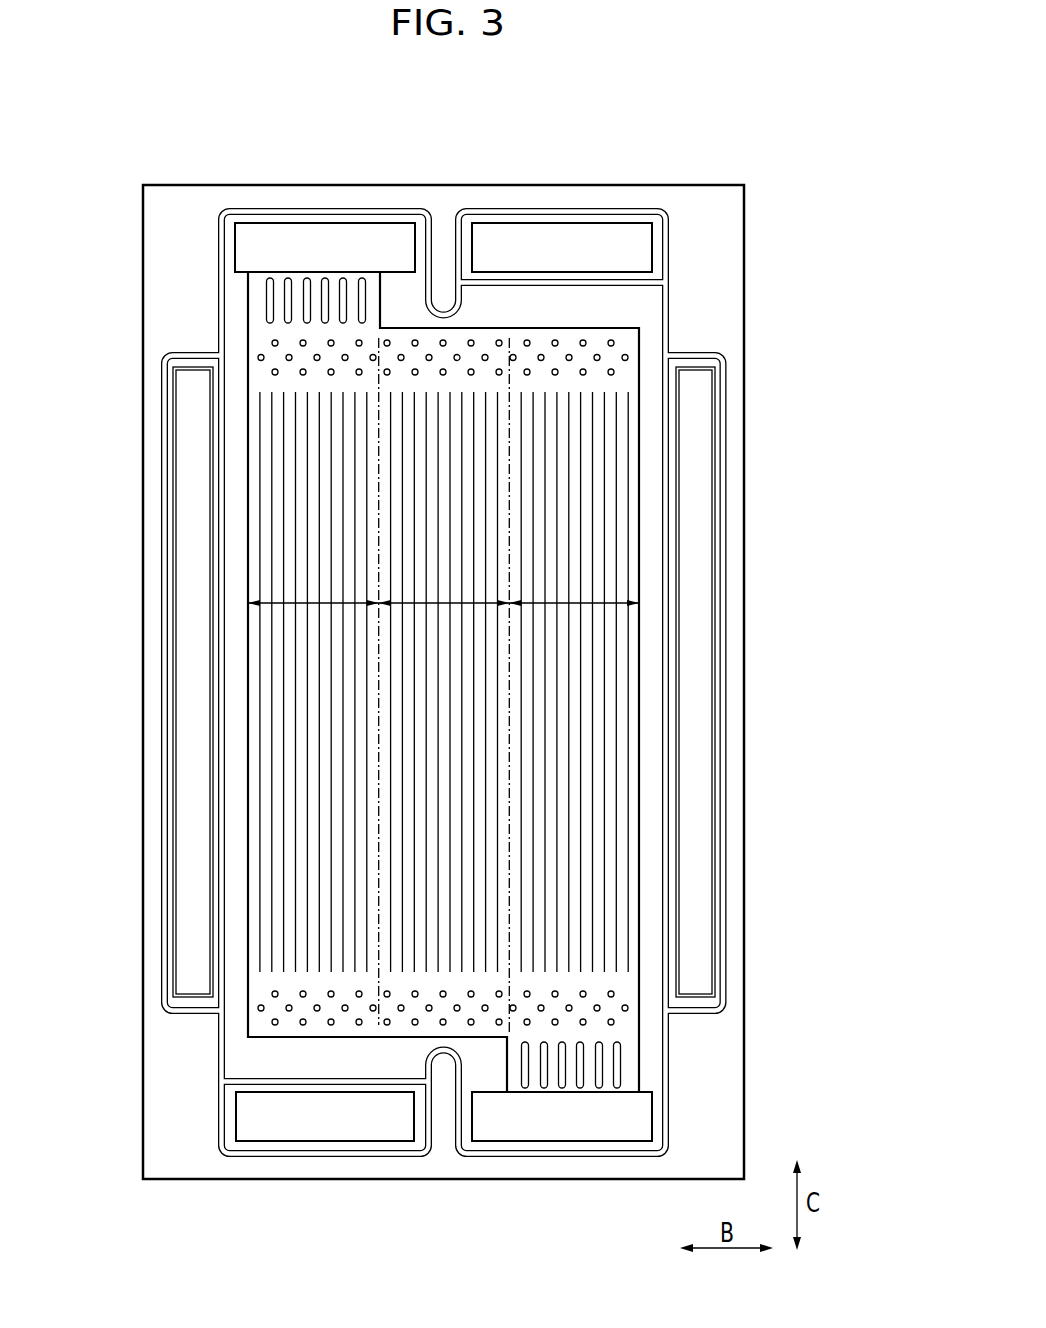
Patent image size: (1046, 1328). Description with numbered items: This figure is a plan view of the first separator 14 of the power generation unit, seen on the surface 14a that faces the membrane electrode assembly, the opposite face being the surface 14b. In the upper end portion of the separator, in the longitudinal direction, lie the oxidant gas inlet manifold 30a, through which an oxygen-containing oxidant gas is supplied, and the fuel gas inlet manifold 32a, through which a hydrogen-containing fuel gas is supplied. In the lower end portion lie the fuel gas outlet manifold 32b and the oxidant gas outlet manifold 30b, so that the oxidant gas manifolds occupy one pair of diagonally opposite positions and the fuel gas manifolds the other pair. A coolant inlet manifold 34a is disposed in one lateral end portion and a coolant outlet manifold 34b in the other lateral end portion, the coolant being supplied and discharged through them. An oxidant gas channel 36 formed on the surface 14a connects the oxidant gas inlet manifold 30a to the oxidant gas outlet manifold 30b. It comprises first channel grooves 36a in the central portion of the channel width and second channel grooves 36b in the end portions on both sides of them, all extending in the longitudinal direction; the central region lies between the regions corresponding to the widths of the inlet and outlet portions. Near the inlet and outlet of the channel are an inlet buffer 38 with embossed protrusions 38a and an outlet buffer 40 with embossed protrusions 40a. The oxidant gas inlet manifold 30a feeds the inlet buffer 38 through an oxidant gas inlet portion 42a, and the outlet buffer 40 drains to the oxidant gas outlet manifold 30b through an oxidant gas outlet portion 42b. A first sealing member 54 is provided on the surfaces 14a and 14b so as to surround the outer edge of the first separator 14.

The first separator 14 is at (536, 81).
The surface of the first separator 14a is at (718, 1113).
The surface of the first separator 14b is at (723, 1140).
The oxidant gas inlet manifold 30a is at (283, 223).
The oxidant gas outlet manifold 30b is at (527, 1141).
The fuel gas inlet manifold 32a is at (524, 223).
The fuel gas outlet manifold 32b is at (284, 1141).
The coolant inlet manifold 34a is at (195, 752).
The coolant outlet manifold 34b is at (693, 468).
The oxidant gas channel 36 is at (446, 682).
The first channel grooves 36a is at (468, 788).
The second channel grooves 36b is at (283, 837).
The inlet buffer 38 is at (486, 330).
The embossed protrusions 38a is at (593, 343).
The outlet buffer 40 is at (400, 1034).
The embossed protrusions 40a is at (360, 1025).
The oxidant gas inlet portion 42a is at (277, 304).
The oxidant gas outlet portion 42b is at (610, 1060).
The first sealing member 54 is at (572, 185).